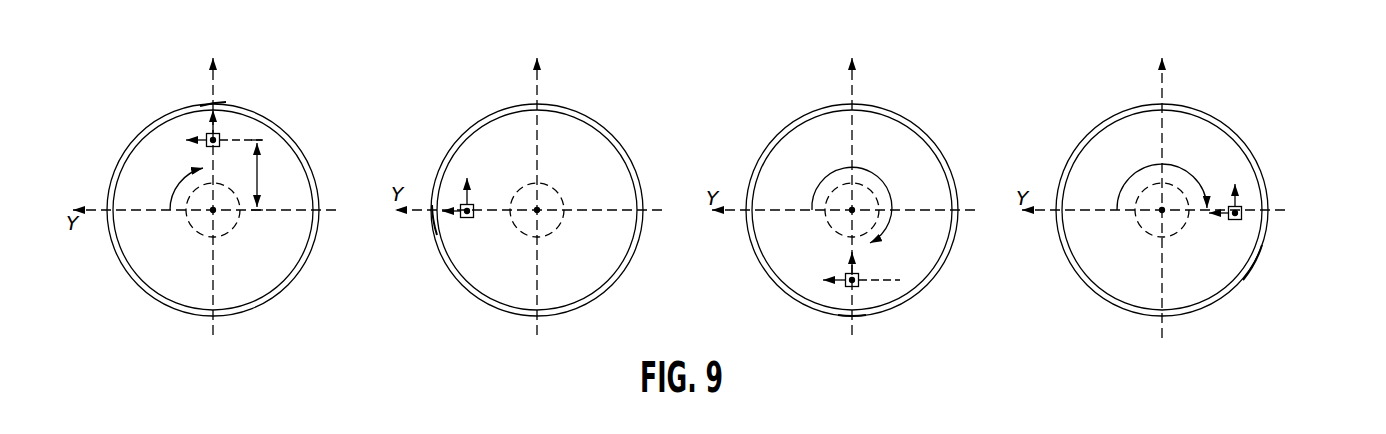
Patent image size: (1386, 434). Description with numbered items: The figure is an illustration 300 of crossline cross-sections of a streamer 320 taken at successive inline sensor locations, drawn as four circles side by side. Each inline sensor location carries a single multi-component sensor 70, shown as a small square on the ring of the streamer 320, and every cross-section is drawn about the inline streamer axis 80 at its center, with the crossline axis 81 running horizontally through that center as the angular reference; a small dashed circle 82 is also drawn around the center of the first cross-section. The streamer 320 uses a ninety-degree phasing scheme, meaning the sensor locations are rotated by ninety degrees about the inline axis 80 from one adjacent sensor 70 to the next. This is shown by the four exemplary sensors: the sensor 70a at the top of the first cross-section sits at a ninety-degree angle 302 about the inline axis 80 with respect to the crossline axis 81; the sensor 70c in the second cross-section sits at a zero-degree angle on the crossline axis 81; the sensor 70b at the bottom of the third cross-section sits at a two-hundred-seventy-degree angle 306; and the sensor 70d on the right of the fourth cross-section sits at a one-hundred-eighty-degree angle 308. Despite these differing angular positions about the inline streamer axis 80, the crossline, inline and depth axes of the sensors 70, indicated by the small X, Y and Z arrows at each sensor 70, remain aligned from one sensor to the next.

The multi-component sensor 70 is at (217, 137).
The sensor at 90° angle 70a is at (232, 101).
The sensor at 270° angle 70b is at (862, 313).
The sensor at 0° angle 70c is at (455, 243).
The sensor at 180° angle 70d is at (1253, 266).
The inline streamer axis 80 is at (216, 213).
The crossline axis 81 is at (97, 207).
The eccentric circular path 82 is at (193, 227).
The illustration 300 is at (925, 70).
The 90° angle 302 is at (177, 177).
The 270° angle 306 is at (843, 171).
The 180° angle 308 is at (1137, 170).
The streamer 320 is at (290, 137).